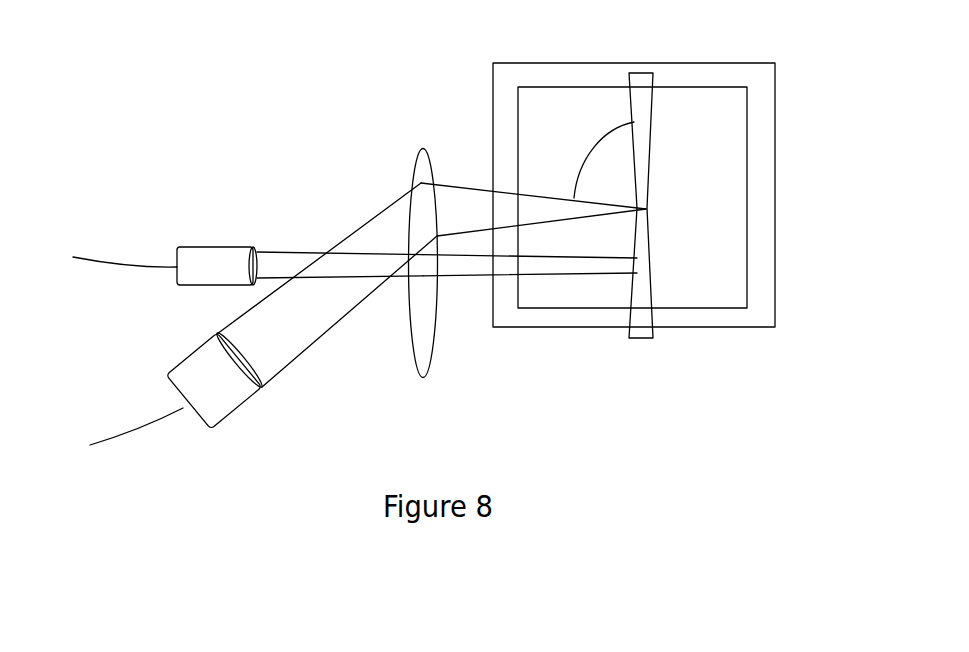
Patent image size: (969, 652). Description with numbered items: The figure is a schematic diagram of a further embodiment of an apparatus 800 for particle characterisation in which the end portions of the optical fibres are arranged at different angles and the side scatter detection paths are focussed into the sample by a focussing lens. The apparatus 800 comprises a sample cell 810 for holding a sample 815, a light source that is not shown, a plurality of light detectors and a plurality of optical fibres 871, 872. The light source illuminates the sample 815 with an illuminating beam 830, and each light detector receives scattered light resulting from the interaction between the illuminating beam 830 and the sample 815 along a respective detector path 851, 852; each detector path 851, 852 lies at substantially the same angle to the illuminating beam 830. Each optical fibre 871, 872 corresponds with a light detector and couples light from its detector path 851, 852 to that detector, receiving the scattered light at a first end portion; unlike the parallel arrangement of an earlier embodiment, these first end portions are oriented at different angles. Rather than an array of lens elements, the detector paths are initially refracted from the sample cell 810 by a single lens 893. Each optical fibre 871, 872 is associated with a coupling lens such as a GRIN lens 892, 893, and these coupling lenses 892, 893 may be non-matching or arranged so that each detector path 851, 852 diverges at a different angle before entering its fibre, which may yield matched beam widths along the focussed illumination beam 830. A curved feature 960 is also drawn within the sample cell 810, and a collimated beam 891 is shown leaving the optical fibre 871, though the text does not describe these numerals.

The apparatus for particle characterisation 800 is at (322, 160).
The sample cell 810 is at (752, 327).
The sample 815 is at (707, 160).
The illuminating beam 830 is at (642, 338).
The curved surface 960 is at (580, 162).
The detector path 851 is at (470, 283).
The detector path 852 is at (457, 192).
The optical fibre 871 is at (163, 263).
The optical fibre 872 is at (182, 409).
The first collimated beam 891 is at (252, 248).
The coupling lens 892 is at (260, 386).
The lens 893 is at (412, 363).